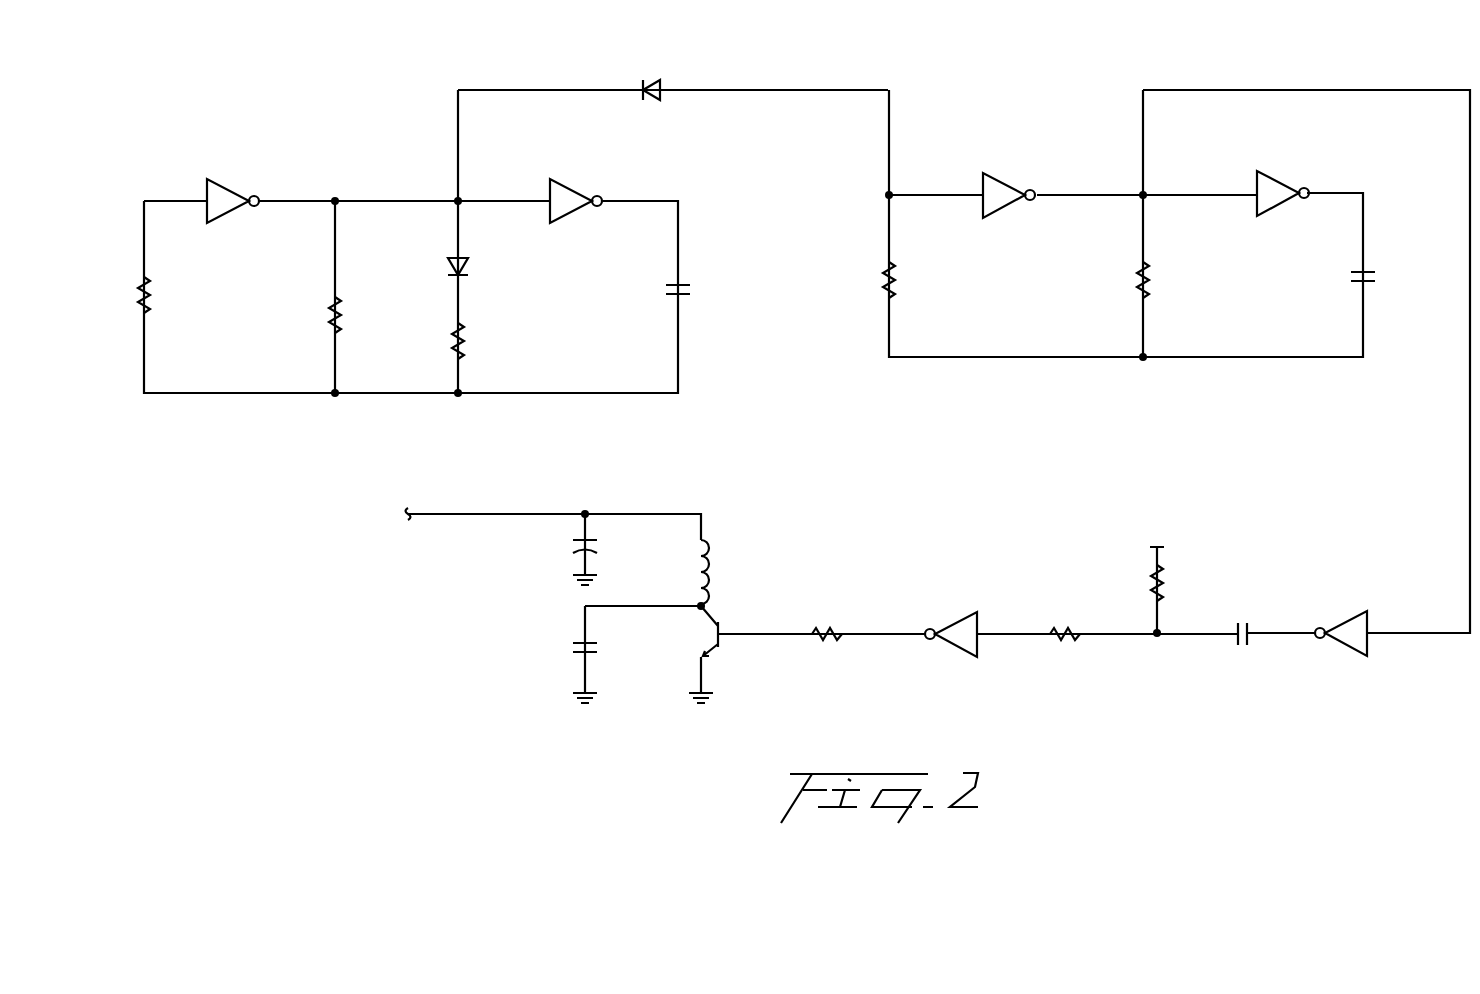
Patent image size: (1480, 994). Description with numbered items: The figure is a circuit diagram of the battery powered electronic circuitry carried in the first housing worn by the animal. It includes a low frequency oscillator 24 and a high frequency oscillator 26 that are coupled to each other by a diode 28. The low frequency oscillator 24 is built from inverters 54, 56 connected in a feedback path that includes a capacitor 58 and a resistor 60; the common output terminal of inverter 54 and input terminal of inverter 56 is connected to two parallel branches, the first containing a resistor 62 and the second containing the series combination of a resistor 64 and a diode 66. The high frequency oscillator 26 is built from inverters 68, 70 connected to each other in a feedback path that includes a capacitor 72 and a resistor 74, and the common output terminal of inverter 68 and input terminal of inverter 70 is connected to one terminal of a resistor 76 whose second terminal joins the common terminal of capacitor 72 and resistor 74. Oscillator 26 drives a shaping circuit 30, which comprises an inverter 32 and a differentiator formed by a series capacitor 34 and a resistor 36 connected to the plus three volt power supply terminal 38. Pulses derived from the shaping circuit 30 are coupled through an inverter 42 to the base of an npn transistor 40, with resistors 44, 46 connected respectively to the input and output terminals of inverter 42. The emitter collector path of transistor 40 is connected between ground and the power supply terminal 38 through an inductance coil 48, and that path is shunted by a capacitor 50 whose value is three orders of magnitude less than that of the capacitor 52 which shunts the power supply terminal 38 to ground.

The low frequency oscillator 24 is at (378, 163).
The high frequency oscillator 26 is at (1094, 147).
The shaping circuit 30 is at (1295, 546).
The diode 28 is at (657, 87).
The inverter 54 is at (224, 199).
The inverter 56 is at (566, 197).
The capacitor 58 is at (669, 293).
The resistor 60 is at (139, 288).
The resistor 62 is at (328, 312).
The resistor 64 is at (452, 338).
The diode 66 is at (451, 267).
The inverter 68 is at (992, 205).
The inverter 70 is at (1263, 202).
The capacitor 72 is at (1356, 277).
The resistor 74 is at (883, 276).
The resistor 76 is at (1137, 277).
The power supply terminal 38 is at (419, 512).
The capacitor 52 is at (572, 549).
The capacitor 50 is at (571, 647).
The inductance coil 48 is at (707, 543).
The npn transistor 40 is at (715, 616).
The resistor 46 is at (839, 627).
The inverter 42 is at (966, 616).
The resistor 44 is at (1071, 641).
The resistor 36 is at (1151, 588).
The series capacitor 34 is at (1236, 645).
The inverter 32 is at (1360, 614).